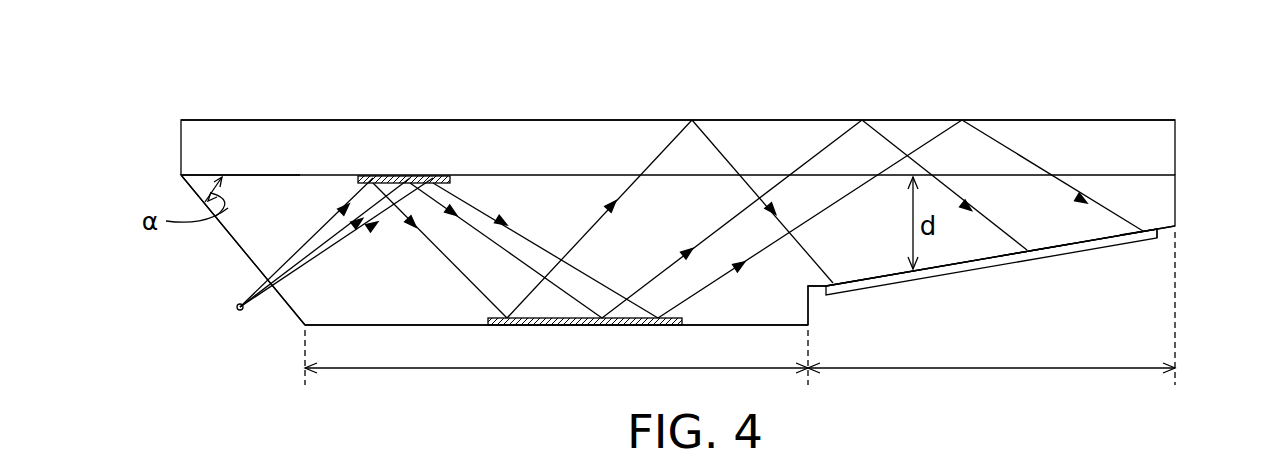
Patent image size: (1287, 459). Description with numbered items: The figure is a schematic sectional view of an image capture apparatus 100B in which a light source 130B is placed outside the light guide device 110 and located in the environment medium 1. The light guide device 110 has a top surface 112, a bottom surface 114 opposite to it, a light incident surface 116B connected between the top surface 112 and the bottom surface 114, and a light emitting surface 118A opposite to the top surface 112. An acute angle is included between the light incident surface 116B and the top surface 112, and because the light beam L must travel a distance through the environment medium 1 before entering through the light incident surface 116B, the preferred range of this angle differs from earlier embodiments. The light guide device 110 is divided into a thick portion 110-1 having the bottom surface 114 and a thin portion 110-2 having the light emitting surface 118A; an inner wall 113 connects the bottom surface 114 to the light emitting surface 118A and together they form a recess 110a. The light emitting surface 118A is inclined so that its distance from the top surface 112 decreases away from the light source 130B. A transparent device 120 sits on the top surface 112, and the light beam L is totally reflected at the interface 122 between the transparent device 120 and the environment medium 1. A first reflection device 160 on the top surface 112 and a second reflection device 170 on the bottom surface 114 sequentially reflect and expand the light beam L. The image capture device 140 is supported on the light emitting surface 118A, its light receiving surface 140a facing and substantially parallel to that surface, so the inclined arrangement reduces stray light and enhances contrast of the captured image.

The environment medium 1 is at (168, 68).
The image capture apparatus 100B is at (1224, 424).
The light guide device 110 is at (1170, 192).
The thick portion 110-1 is at (556, 367).
The thin portion 110-2 is at (991, 319).
The recess 110a is at (948, 288).
The top surface 112 is at (211, 164).
The inner wall 113 is at (812, 304).
The bottom surface 114 is at (339, 328).
The light incident surface 116B is at (242, 248).
The light emitting surface 118A is at (1038, 249).
The transparent device 120 is at (1158, 150).
The interface 122 is at (1140, 117).
The light source 130B is at (238, 309).
The image capture device 140 is at (1113, 242).
The light receiving surface 140a is at (1146, 228).
The first reflection device 160 is at (401, 177).
The second reflection device 170 is at (576, 326).
The light beam L is at (812, 153).